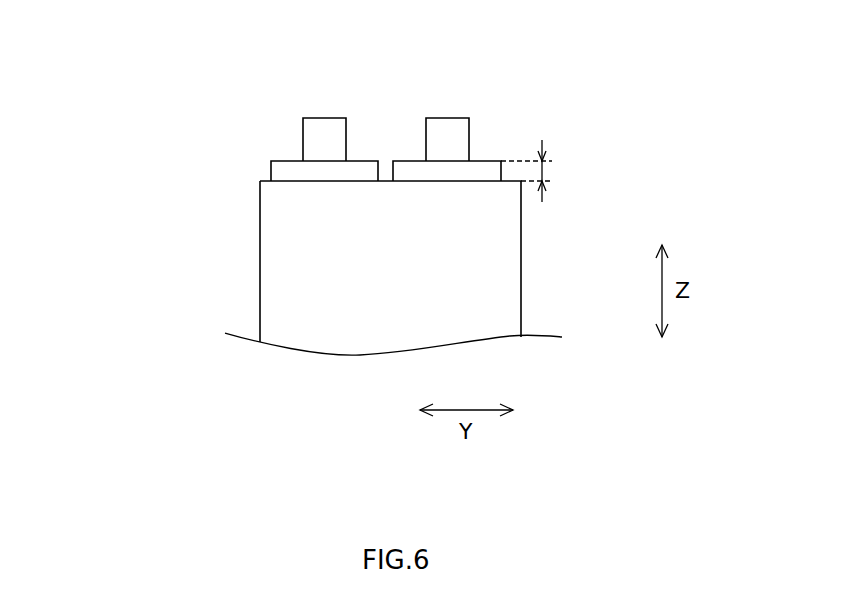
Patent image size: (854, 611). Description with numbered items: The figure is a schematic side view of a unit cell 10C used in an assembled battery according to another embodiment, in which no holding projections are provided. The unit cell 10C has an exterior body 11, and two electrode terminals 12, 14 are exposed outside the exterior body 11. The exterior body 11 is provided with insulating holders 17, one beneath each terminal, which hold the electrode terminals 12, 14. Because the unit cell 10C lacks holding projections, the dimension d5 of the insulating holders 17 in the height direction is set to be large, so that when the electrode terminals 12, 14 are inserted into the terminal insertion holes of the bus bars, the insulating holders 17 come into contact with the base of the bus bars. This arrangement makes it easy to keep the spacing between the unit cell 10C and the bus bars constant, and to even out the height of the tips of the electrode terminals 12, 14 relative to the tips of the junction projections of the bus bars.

The unit cell 10C is at (122, 73).
The exterior body 11 is at (515, 253).
The electrode terminal 12 is at (330, 121).
The electrode terminal 14 is at (452, 121).
The insulating holder 17 is at (284, 161).
The dimension of the insulating holders in the height direction d5 is at (544, 171).